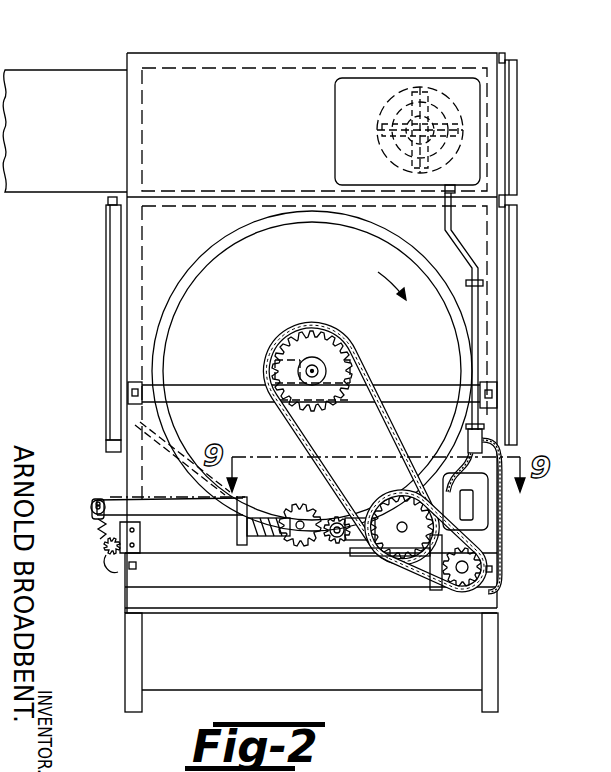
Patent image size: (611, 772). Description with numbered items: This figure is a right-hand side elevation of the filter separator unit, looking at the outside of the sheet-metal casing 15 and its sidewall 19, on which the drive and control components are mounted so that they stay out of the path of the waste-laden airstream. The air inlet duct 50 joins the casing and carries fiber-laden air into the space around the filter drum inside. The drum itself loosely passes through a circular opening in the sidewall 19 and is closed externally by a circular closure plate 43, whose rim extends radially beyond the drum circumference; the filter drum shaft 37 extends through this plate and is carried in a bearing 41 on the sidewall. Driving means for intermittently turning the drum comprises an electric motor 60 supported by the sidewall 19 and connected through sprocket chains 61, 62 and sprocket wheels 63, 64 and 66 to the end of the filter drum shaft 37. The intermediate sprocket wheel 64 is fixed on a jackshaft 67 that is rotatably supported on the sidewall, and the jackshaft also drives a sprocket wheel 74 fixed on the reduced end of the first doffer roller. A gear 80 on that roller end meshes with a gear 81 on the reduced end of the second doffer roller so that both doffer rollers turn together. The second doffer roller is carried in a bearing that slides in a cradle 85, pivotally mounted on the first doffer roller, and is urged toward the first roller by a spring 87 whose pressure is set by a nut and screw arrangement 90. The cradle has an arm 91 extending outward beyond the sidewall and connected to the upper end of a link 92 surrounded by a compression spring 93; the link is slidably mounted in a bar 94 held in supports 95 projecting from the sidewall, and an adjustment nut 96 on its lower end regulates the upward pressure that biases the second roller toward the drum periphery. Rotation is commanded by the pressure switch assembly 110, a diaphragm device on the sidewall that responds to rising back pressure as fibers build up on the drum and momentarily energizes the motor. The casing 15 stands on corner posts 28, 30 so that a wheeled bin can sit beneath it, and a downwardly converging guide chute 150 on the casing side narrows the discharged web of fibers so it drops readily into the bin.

The casing 15 is at (348, 50).
The air inlet duct 50 is at (72, 134).
The pressure switch assembly 110 is at (460, 112).
The sidewall 19 is at (195, 247).
The closure plate 43 is at (330, 276).
The bearing 41 is at (275, 360).
The filter drum shaft 37 is at (325, 352).
The sprocket wheel 66 is at (355, 350).
The sprocket chain 62 is at (384, 424).
The jackshaft 67 is at (406, 524).
The sprocket wheel 63 is at (465, 592).
The intermediate sprocket wheel 64 is at (400, 562).
The sprocket chain 61 is at (440, 590).
The electric motor 60 is at (480, 511).
The gear 81 is at (297, 505).
The gear 80 is at (338, 517).
The sprocket wheel 74 is at (338, 542).
The cradle 85 is at (290, 545).
The spring 87 is at (247, 545).
The nut and screw arrangement 90 is at (240, 528).
The arm 91 is at (152, 505).
The link 92 is at (92, 488).
The compression spring 93 is at (96, 516).
The bar 94 is at (104, 541).
The adjustment nut 96 is at (104, 560).
The support 95 is at (115, 567).
The corner post 28 is at (128, 655).
The corner post 30 is at (490, 668).
The guide chute 150 is at (335, 669).